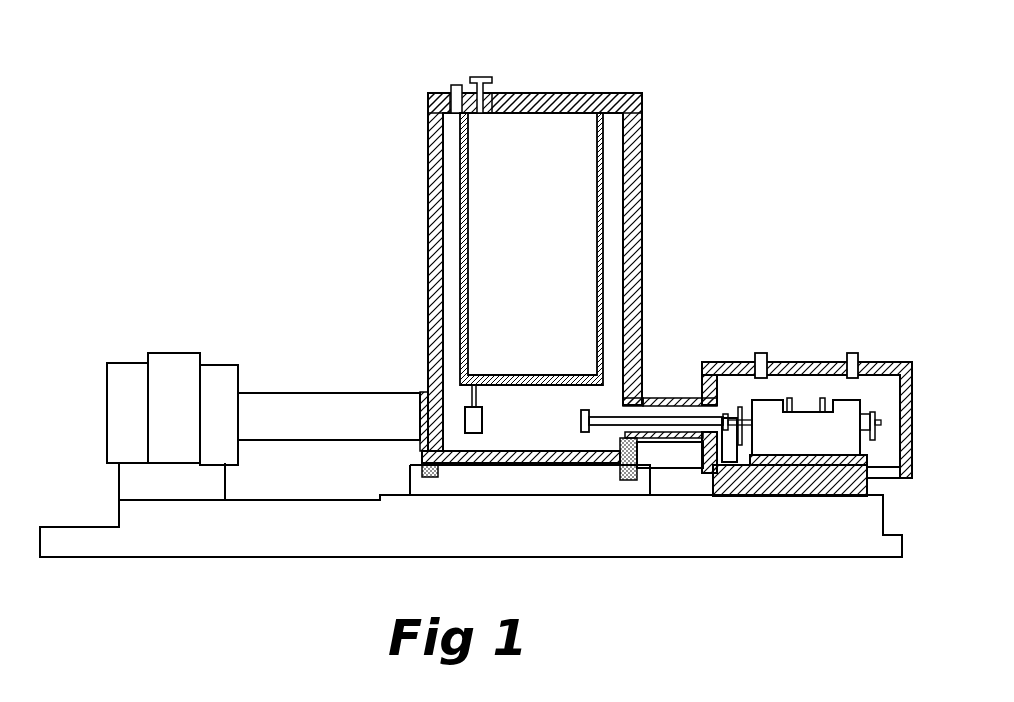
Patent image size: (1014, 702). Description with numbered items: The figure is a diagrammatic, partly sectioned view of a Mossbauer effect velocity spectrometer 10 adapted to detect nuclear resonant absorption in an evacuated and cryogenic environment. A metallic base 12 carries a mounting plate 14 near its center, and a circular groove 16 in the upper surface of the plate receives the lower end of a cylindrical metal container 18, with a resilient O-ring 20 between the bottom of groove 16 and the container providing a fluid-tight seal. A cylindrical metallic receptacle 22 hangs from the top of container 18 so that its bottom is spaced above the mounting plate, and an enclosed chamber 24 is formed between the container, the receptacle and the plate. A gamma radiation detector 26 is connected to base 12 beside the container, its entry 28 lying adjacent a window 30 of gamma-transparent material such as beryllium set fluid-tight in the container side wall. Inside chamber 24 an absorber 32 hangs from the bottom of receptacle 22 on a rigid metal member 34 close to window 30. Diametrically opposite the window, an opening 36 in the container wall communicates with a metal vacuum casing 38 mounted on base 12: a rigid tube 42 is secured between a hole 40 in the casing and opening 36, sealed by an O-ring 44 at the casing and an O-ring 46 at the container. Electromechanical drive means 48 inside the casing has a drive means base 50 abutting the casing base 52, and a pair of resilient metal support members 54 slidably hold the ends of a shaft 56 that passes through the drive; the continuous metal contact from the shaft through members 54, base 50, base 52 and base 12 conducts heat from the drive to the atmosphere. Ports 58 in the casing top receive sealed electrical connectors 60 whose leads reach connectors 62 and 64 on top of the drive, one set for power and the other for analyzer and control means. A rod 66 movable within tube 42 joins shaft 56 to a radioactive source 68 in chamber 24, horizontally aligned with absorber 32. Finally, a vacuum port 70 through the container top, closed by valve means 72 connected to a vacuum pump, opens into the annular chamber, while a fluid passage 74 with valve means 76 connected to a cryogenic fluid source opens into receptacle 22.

The Mossbauer effect velocity spectrometer 10 is at (575, 238).
The base 12 is at (885, 517).
The mounting plate 14 is at (540, 493).
The circular groove 16 is at (643, 446).
The cylindrical metal container 18 is at (642, 100).
The O-ring 20 is at (440, 470).
The cylindrical metallic receptacle 22 is at (532, 240).
The enclosed chamber 24 is at (537, 448).
The detector 26 is at (172, 352).
The entry 28 is at (423, 396).
The window 30 is at (425, 447).
The absorber 32 is at (483, 420).
The rigid metal member 34 is at (478, 392).
The opening 36 is at (630, 384).
The vacuum casing 38 is at (815, 365).
The hole 40 is at (678, 398).
The rigid tube 42 is at (657, 398).
The O-ring 44 is at (715, 466).
The O-ring 46 is at (630, 442).
The electromechanical drive means 48 is at (822, 444).
The drive means base 50 is at (806, 462).
The casing base 52 is at (760, 475).
The resilient metal support members 54 is at (743, 420).
The shaft 56 is at (738, 416).
The ports 58 is at (752, 366).
The electrical connectors 60 is at (761, 353).
The electrical connector 62 is at (800, 400).
The electrical connector 64 is at (823, 402).
The rod 66 is at (612, 419).
The radioactive source 68 is at (583, 412).
The vacuum port 70 is at (438, 93).
The valve means 72 is at (452, 85).
The fluid passage 74 is at (492, 92).
The valve means 76 is at (480, 77).